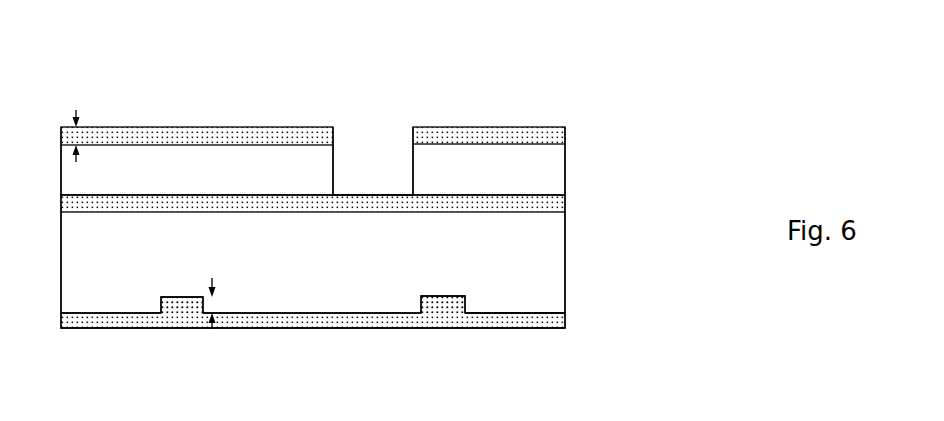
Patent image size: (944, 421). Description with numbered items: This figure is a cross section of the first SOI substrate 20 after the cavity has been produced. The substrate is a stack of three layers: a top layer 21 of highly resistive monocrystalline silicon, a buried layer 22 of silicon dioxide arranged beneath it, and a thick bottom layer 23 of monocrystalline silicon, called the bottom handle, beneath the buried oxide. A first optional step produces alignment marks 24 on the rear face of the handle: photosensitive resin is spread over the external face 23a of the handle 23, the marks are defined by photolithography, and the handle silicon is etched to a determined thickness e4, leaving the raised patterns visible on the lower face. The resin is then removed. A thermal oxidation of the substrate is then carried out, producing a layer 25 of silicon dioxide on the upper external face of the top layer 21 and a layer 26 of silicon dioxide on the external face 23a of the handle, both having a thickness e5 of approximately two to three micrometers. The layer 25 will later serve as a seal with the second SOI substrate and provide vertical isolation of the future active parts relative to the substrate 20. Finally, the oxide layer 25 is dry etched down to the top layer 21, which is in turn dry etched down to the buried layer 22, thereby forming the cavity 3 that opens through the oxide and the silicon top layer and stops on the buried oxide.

The first SOI substrate 20 is at (662, 256).
The layer of SiO2 25 is at (245, 128).
The top layer 21 is at (527, 169).
The cavity 3 is at (376, 152).
The buried layer of SiO2 22 is at (523, 205).
The bottom layer 23 is at (507, 290).
The external face of the handle 23a is at (523, 312).
The layer of SiO2 26 is at (506, 323).
The alignment marks 24 is at (149, 302).
The thickness of the SiO2 layers e5 is at (78, 133).
The etch thickness of the alignment marks e4 is at (213, 302).